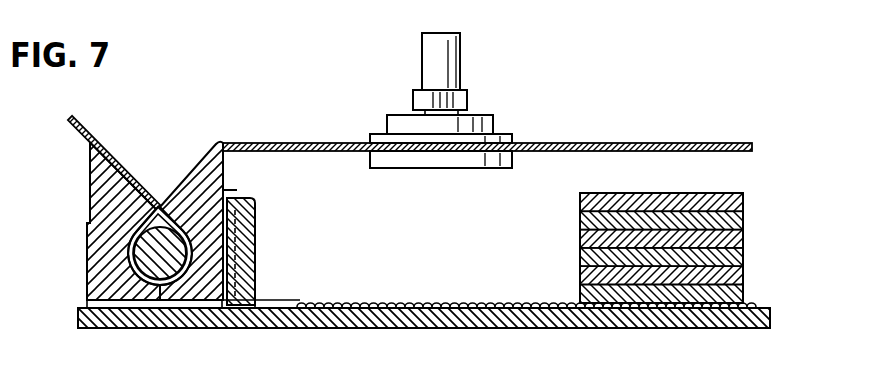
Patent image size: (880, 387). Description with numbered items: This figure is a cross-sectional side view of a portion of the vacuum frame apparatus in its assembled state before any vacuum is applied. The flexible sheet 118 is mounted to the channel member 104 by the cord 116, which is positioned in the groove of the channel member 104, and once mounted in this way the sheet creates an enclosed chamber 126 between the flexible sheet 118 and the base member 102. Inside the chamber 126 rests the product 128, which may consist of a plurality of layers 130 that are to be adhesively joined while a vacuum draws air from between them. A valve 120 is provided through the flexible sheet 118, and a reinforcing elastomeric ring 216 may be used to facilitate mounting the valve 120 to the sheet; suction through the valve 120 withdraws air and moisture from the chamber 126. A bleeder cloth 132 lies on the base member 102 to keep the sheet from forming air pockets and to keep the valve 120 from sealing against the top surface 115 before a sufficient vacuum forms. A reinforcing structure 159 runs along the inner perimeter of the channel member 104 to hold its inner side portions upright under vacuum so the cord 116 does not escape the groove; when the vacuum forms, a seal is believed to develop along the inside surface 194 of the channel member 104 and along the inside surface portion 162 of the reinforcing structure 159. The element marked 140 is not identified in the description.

The base member 102 is at (432, 328).
The channel member 104 is at (89, 170).
The top surface 115 is at (277, 305).
The cord 116 is at (157, 256).
The flexible sheet 118 is at (609, 143).
The valve 120 is at (461, 66).
The enclosed chamber 126 is at (440, 246).
The product 128 is at (743, 193).
The layers 130 is at (745, 222).
The bleeder cloth 132 is at (526, 279).
The clamp block 140 is at (204, 156).
The reinforcing structure 159 is at (262, 207).
The inside surface portion 162 is at (256, 237).
The inside surface 194 is at (232, 183).
The reinforcing elastomeric ring 216 is at (514, 152).